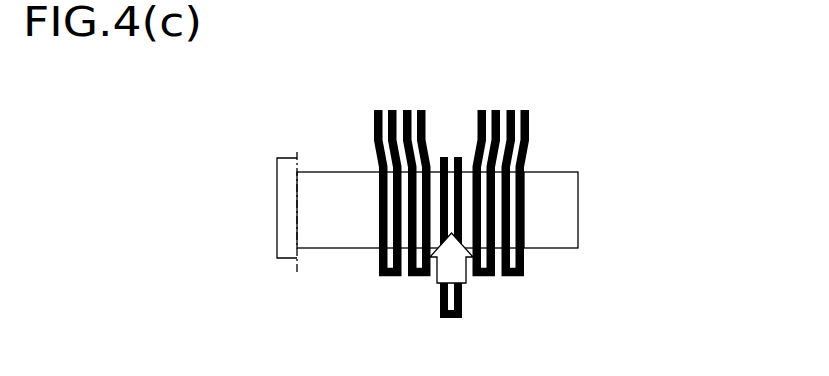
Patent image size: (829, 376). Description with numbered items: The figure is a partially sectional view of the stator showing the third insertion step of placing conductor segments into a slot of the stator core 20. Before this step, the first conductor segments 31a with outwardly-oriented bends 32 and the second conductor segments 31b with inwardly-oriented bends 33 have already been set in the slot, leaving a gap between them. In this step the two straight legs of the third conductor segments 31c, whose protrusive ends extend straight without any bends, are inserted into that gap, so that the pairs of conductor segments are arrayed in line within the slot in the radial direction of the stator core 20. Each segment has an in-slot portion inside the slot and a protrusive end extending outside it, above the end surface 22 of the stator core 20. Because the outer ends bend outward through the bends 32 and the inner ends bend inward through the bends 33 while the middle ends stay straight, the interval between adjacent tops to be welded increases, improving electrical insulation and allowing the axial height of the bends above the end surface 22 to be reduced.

The stator core 20 is at (308, 165).
The end surface 22 is at (332, 172).
The first conductor segments 31a is at (529, 278).
The second conductor segments 31b is at (435, 278).
The third conductor segments 31c is at (467, 320).
The outwardly-oriented bends 32 is at (484, 158).
The inwardly-oriented bends 33 is at (382, 161).